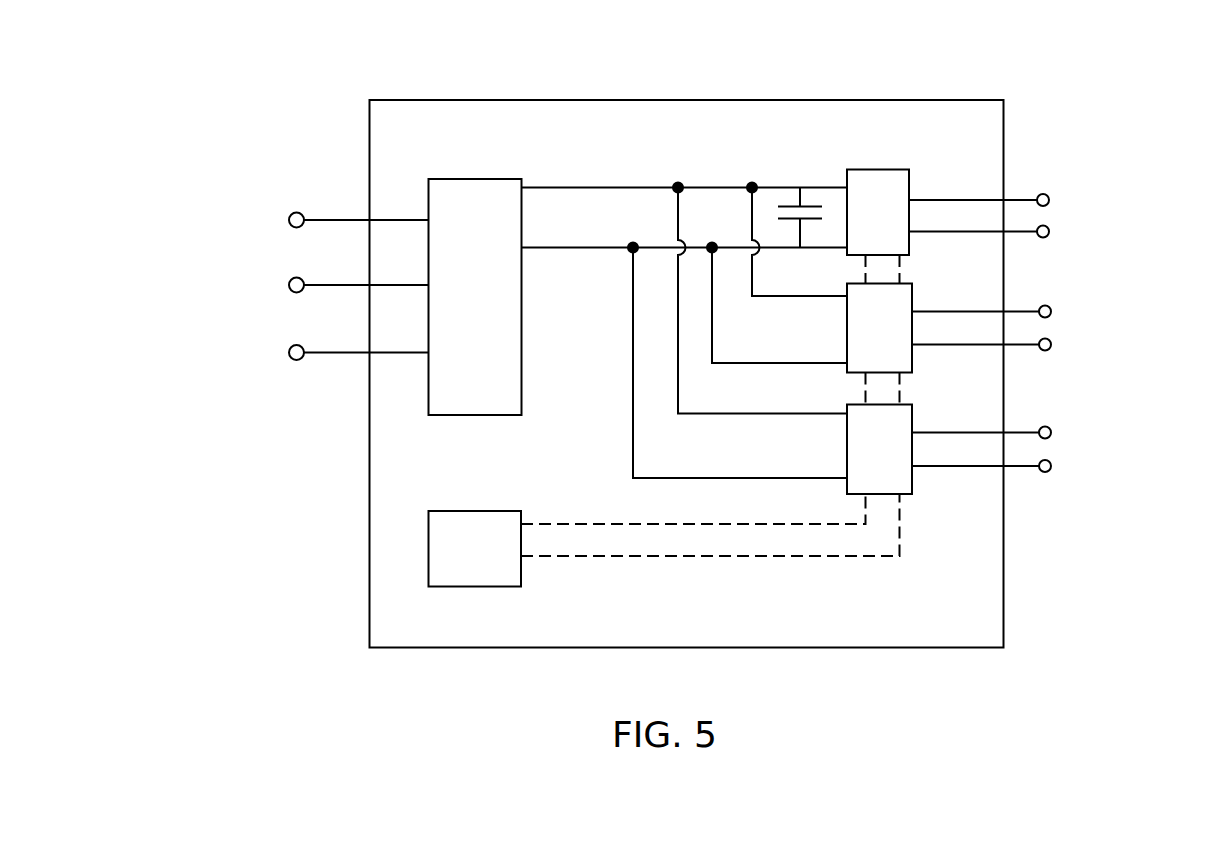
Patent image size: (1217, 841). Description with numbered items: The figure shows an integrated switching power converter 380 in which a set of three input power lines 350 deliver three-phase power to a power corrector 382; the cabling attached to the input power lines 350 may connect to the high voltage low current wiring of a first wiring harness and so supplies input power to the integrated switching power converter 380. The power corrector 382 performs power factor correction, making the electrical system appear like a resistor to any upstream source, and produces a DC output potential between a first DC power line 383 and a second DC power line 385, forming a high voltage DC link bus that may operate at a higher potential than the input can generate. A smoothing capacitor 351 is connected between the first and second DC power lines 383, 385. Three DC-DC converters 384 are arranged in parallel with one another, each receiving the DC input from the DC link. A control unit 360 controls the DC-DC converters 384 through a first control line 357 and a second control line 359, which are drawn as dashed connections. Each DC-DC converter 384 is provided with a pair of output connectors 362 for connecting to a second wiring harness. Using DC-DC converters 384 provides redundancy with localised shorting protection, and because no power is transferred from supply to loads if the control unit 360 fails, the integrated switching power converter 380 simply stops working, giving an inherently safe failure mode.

The integrated switching power converter 380 is at (262, 88).
The input power lines 350 is at (265, 194).
The power corrector 382 is at (522, 391).
The first DC power line 383 is at (593, 186).
The second DC power line 385 is at (593, 249).
The smoothing capacitor 351 is at (800, 180).
The DC-DC converters 384 is at (909, 241).
The output connectors 362 is at (1068, 175).
The control unit 360 is at (475, 510).
The second control line 359 is at (575, 523).
The first control line 357 is at (588, 557).